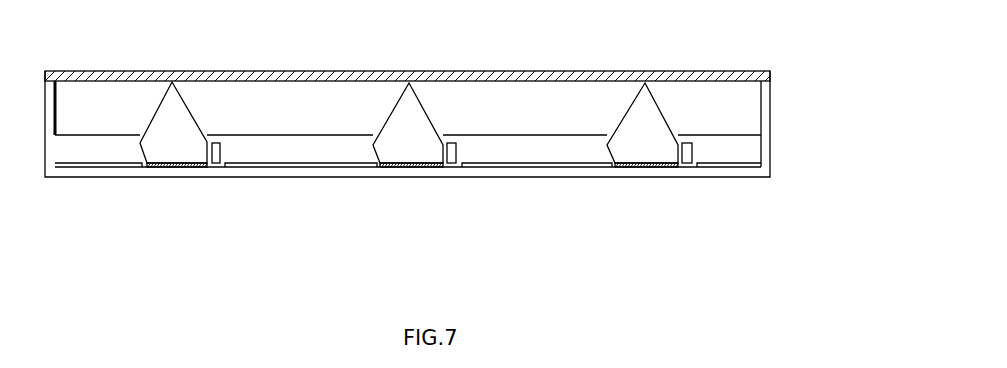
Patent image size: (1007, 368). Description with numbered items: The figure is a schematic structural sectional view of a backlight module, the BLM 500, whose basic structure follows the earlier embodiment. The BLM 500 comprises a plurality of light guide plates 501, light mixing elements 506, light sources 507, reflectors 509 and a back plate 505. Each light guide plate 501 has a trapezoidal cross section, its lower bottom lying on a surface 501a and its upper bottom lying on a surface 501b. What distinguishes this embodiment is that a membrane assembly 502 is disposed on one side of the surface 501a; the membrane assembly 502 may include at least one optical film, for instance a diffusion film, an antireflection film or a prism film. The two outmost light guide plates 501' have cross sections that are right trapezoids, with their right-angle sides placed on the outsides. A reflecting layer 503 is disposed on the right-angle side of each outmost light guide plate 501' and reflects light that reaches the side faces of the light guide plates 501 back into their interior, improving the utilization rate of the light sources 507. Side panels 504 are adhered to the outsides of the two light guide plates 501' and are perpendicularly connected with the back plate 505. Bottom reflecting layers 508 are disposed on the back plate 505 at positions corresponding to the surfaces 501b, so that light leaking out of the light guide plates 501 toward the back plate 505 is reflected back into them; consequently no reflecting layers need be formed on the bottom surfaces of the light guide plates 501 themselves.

The BLM 500 is at (448, 297).
The light guide plates 501 is at (408, 71).
The outmost light guide plates 501' is at (417, 55).
The surface 501a is at (322, 81).
The surfaces 501b is at (530, 135).
The membrane assembly 502 is at (770, 80).
The reflecting layer 503 is at (761, 110).
The side panels 504 is at (47, 132).
The back plate 505 is at (95, 168).
The light mixing elements 506 is at (165, 145).
The light sources 507 is at (218, 150).
The bottom reflecting layers 508 is at (278, 163).
The reflectors 509 is at (185, 167).